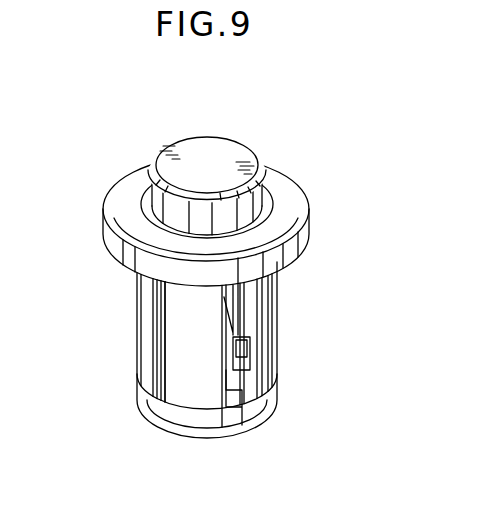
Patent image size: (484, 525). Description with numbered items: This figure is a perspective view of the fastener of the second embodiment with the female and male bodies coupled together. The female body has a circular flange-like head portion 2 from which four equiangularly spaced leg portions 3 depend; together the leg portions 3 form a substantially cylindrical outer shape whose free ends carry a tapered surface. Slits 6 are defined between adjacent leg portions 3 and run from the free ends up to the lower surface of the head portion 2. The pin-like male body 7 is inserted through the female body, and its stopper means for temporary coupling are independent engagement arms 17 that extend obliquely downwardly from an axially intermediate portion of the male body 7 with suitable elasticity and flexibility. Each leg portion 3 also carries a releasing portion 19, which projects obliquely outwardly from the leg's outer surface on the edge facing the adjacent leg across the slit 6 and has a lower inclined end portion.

The head portion 2 is at (309, 207).
The leg portions 3 is at (136, 311).
The slits 6 is at (162, 340).
The male body 7 is at (238, 163).
The engagement arms 17 is at (227, 331).
The releasing portions 19 is at (227, 357).